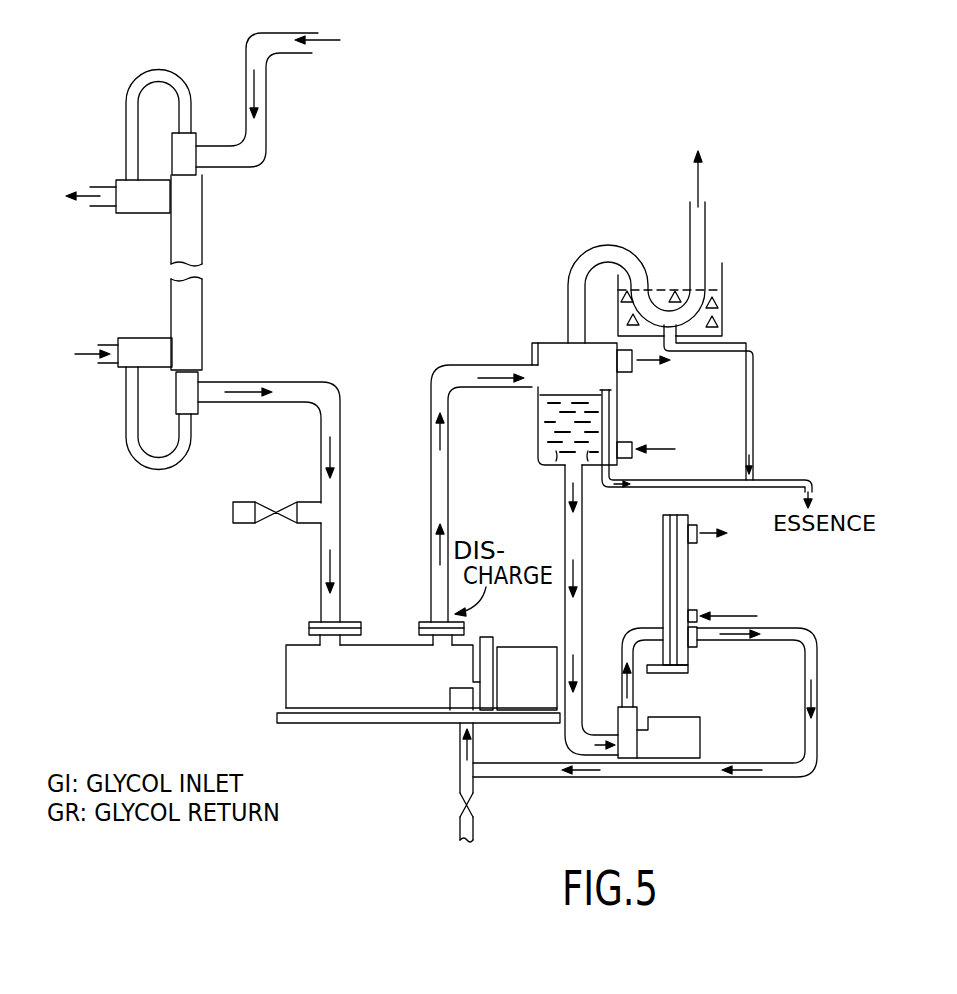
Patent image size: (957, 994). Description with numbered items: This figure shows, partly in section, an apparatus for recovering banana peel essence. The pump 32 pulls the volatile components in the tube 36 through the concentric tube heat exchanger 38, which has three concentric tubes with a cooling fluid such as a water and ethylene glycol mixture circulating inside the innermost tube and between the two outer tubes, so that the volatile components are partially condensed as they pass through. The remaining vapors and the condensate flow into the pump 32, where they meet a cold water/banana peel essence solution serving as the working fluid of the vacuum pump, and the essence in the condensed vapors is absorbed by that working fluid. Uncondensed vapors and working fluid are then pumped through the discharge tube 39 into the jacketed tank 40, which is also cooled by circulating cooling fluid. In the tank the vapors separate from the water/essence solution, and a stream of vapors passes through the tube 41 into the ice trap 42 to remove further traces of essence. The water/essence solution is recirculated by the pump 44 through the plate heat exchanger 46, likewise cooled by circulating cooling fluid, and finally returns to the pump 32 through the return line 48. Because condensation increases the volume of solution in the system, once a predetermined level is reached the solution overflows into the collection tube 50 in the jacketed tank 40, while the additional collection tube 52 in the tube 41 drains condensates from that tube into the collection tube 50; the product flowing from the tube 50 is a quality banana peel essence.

The pump 32 is at (287, 678).
The tube 36 is at (246, 48).
The concentric tube heat exchanger 38 is at (207, 305).
The discharge tube 39 is at (436, 430).
The jacketed tank 40 is at (546, 344).
The tube 41 is at (601, 248).
The ice trap 42 is at (724, 307).
The pump 44 is at (648, 713).
The plate heat exchanger 46 is at (692, 580).
The return line 48 is at (459, 764).
The collection tube 50 is at (609, 418).
The additional collection tube 52 is at (724, 338).